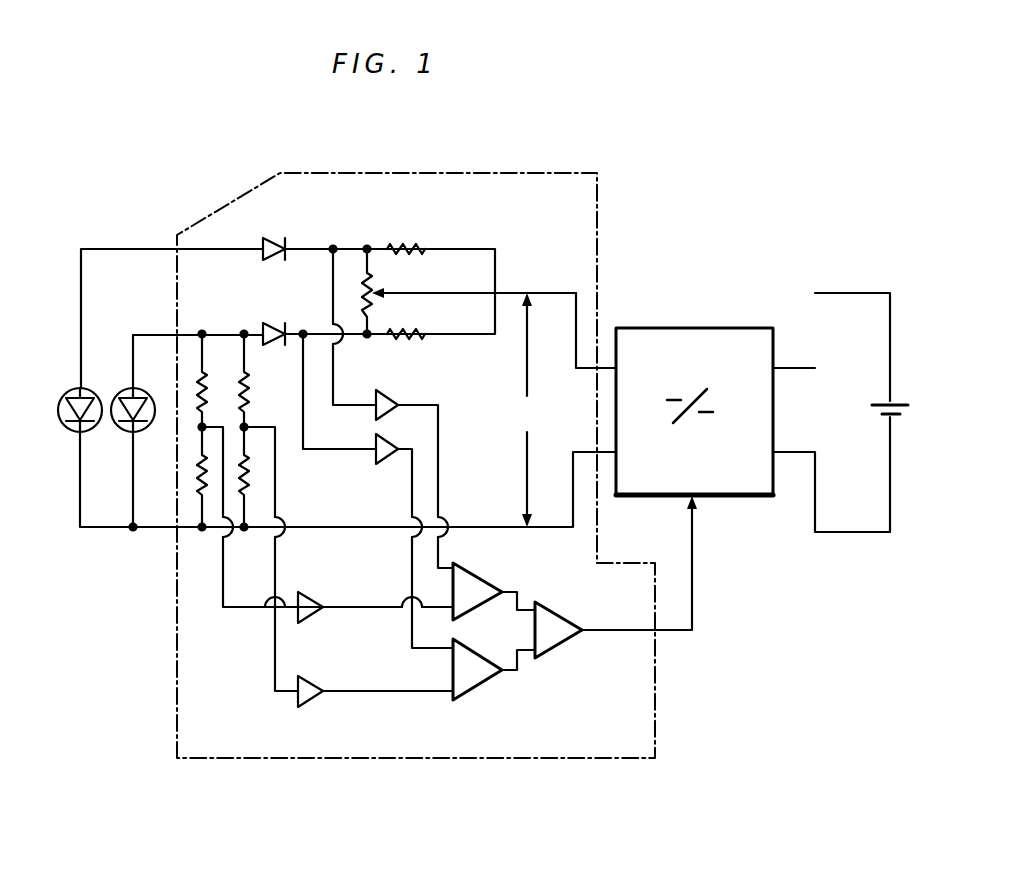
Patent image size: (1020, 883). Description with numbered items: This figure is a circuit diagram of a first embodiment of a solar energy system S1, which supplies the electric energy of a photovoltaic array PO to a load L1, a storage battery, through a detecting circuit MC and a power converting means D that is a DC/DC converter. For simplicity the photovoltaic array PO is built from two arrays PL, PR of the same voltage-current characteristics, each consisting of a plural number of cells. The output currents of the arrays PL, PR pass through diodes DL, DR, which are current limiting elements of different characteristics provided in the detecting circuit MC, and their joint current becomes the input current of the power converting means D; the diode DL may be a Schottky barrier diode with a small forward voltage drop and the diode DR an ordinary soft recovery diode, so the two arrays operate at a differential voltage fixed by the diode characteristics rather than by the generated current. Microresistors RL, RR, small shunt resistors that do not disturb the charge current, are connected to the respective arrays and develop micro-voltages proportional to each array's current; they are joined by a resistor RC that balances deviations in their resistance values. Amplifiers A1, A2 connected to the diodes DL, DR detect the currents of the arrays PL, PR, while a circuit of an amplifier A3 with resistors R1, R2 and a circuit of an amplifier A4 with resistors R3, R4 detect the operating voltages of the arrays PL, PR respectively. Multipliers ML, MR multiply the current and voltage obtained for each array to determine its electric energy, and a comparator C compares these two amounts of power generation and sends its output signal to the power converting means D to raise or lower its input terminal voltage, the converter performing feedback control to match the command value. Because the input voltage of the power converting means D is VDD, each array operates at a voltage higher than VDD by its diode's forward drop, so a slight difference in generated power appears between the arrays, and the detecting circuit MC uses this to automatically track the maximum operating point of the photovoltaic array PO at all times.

The solar energy system S1 is at (634, 253).
The detecting circuit MC is at (655, 712).
The photovoltaic array PO is at (170, 290).
The array PL is at (90, 387).
The array PR is at (122, 387).
The resistor R1 is at (198, 374).
The resistor R2 is at (200, 472).
The resistor R3 is at (240, 374).
The resistor R4 is at (246, 465).
The diode DL is at (278, 243).
The diode DR is at (282, 326).
The microresistor RL is at (418, 245).
The microresistor RR is at (407, 340).
The resistor RC is at (372, 300).
The input voltage of the power converting means VDD is at (526, 410).
The amplifier A1 is at (386, 392).
The amplifier A2 is at (386, 463).
The amplifier A3 is at (310, 601).
The amplifier A4 is at (312, 698).
The multiplier ML is at (475, 588).
The multiplier MR is at (475, 676).
The comparator C is at (556, 625).
The power converting means D is at (702, 342).
The load L1 is at (878, 398).